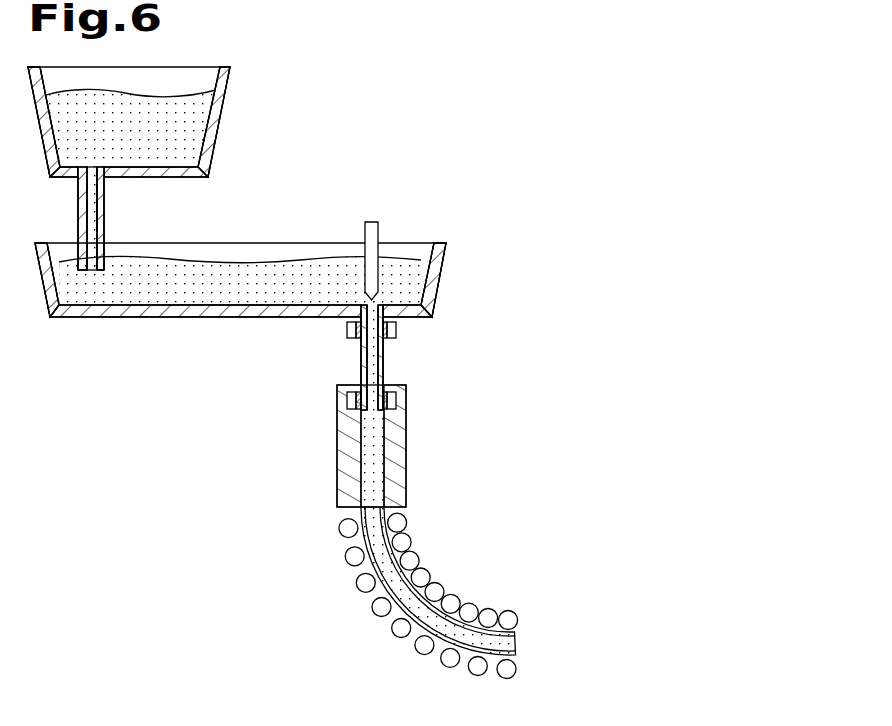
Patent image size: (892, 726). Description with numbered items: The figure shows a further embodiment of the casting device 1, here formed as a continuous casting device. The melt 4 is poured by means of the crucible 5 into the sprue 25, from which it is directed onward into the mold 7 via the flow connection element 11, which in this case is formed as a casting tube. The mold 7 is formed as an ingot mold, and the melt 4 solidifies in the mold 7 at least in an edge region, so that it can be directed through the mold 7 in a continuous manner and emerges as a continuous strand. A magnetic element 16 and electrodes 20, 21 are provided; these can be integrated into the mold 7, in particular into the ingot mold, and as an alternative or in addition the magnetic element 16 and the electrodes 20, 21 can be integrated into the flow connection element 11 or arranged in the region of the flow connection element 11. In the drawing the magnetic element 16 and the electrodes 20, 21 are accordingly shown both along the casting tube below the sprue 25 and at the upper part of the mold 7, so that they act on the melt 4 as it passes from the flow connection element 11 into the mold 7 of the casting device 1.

The casting device 1 is at (672, 139).
The melt 4 is at (405, 268).
The crucible 5 is at (216, 100).
The mold 7 is at (400, 448).
The flow connection element 11 is at (346, 361).
The magnetic element 16 is at (220, 446).
The electrode 20 is at (369, 365).
The electrode 21 is at (603, 347).
The sprue 25 is at (440, 279).